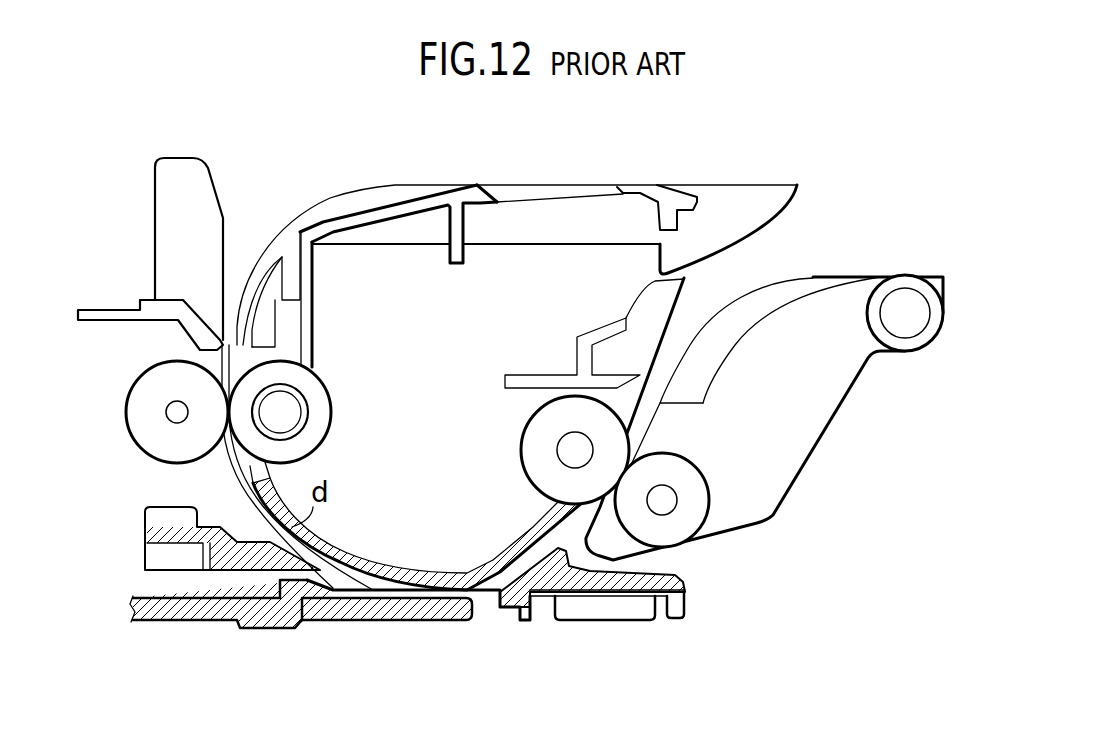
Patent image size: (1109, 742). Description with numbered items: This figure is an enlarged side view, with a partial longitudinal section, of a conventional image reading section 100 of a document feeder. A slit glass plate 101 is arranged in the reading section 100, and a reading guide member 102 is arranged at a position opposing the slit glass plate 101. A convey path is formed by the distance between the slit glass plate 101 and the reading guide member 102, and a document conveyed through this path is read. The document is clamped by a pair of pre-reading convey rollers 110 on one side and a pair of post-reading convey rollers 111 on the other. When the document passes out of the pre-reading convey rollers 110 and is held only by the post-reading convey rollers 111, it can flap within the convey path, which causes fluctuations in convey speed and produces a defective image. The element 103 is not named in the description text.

The reading section 100 is at (309, 632).
The slit glass plate 101 is at (447, 610).
The reading guide member 102 is at (432, 578).
The intermediate plate 103 is at (398, 597).
The pre-reading convey rollers 110 is at (126, 409).
The post-reading convey rollers 111 is at (708, 515).